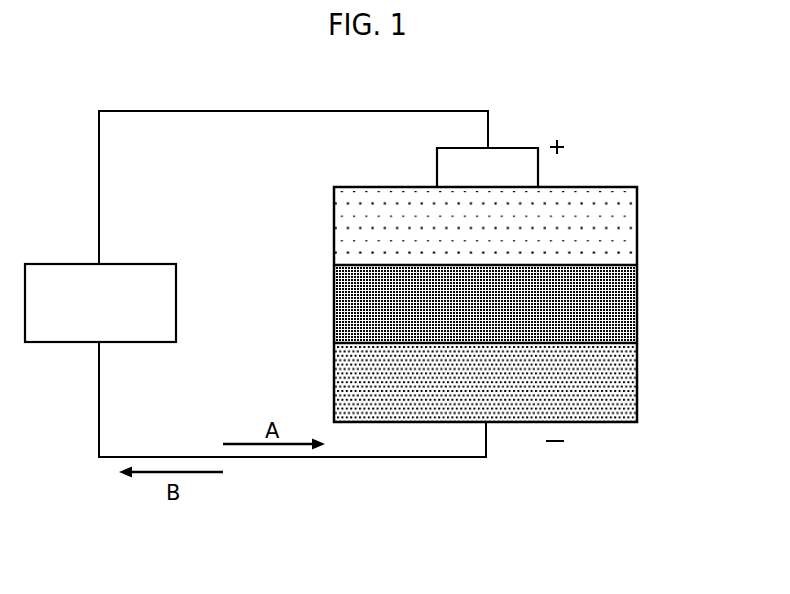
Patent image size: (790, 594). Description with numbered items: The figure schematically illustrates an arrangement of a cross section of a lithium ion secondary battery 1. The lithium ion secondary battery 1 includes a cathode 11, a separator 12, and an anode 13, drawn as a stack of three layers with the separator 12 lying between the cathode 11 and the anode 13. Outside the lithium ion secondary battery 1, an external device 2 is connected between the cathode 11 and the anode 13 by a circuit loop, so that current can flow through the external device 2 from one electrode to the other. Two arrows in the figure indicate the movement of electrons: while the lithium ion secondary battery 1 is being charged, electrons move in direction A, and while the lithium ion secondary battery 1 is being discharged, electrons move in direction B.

The lithium ion secondary battery 1 is at (530, 304).
The external device 2 is at (170, 303).
The cathode 11 is at (626, 226).
The separator 12 is at (626, 302).
The anode 13 is at (508, 382).